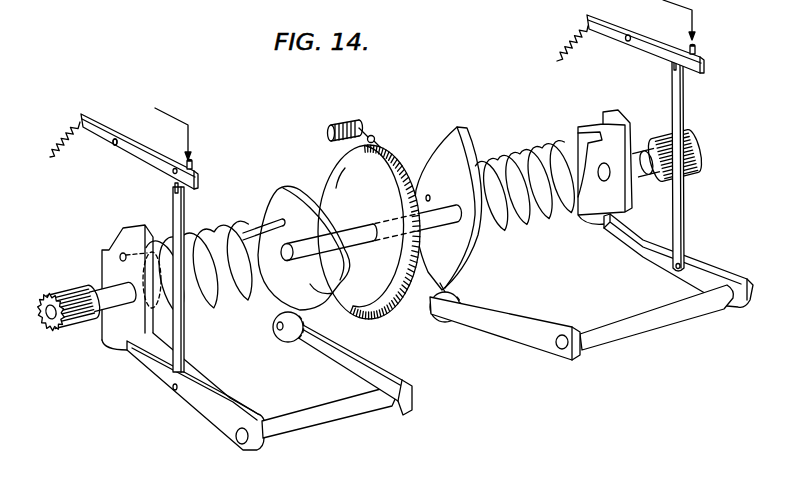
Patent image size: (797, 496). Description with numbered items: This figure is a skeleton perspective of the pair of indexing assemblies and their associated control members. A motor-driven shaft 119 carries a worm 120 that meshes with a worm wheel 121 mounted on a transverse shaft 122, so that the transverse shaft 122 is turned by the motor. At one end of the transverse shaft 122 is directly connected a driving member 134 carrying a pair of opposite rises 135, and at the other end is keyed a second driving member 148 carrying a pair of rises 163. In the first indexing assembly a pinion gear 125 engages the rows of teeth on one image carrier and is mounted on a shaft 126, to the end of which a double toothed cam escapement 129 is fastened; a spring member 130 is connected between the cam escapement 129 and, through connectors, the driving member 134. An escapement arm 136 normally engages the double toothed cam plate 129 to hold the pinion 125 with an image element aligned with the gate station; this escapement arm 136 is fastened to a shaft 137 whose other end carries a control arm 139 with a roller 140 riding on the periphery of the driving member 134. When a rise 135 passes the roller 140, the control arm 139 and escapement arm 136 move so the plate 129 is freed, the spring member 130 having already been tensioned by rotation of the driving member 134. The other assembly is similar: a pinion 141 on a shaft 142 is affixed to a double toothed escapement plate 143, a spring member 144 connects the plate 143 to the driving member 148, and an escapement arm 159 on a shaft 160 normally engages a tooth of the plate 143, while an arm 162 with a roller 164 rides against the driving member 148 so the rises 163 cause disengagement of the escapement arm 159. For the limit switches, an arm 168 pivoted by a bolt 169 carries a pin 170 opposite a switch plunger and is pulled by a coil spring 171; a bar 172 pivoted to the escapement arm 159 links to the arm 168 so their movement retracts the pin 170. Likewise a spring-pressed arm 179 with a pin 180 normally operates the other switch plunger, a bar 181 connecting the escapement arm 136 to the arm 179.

The shaft 119 is at (374, 137).
The worm 120 is at (357, 109).
The worm wheel 121 is at (333, 165).
The transverse shaft 122 is at (332, 240).
The pinion gear 125 is at (687, 140).
The shaft 126 is at (643, 150).
The double toothed cam escapement 129 is at (588, 132).
The spring member 130 is at (523, 151).
The driving member 134 is at (428, 163).
The rises 135 is at (458, 127).
The escapement arm 136 is at (693, 263).
The shaft 137 is at (622, 320).
The control arm 139 is at (510, 323).
The roller 140 is at (458, 293).
The pinion 141 is at (67, 328).
The shaft 142 is at (93, 286).
The double toothed escapement plate 143 is at (107, 258).
The spring member 144 is at (200, 234).
The driving member 148 is at (278, 191).
The escapement arm 159 is at (201, 413).
The shaft 160 is at (300, 417).
The arm 162 is at (343, 358).
The rises 163 is at (243, 230).
The roller 164 is at (275, 309).
The arm 168 is at (143, 159).
The bolt 169 is at (113, 142).
The pin 170 is at (194, 165).
The coil spring 171 is at (72, 131).
The bar 172 is at (173, 203).
The arm 179 is at (655, 44).
The pin 180 is at (697, 47).
The bar 181 is at (684, 186).